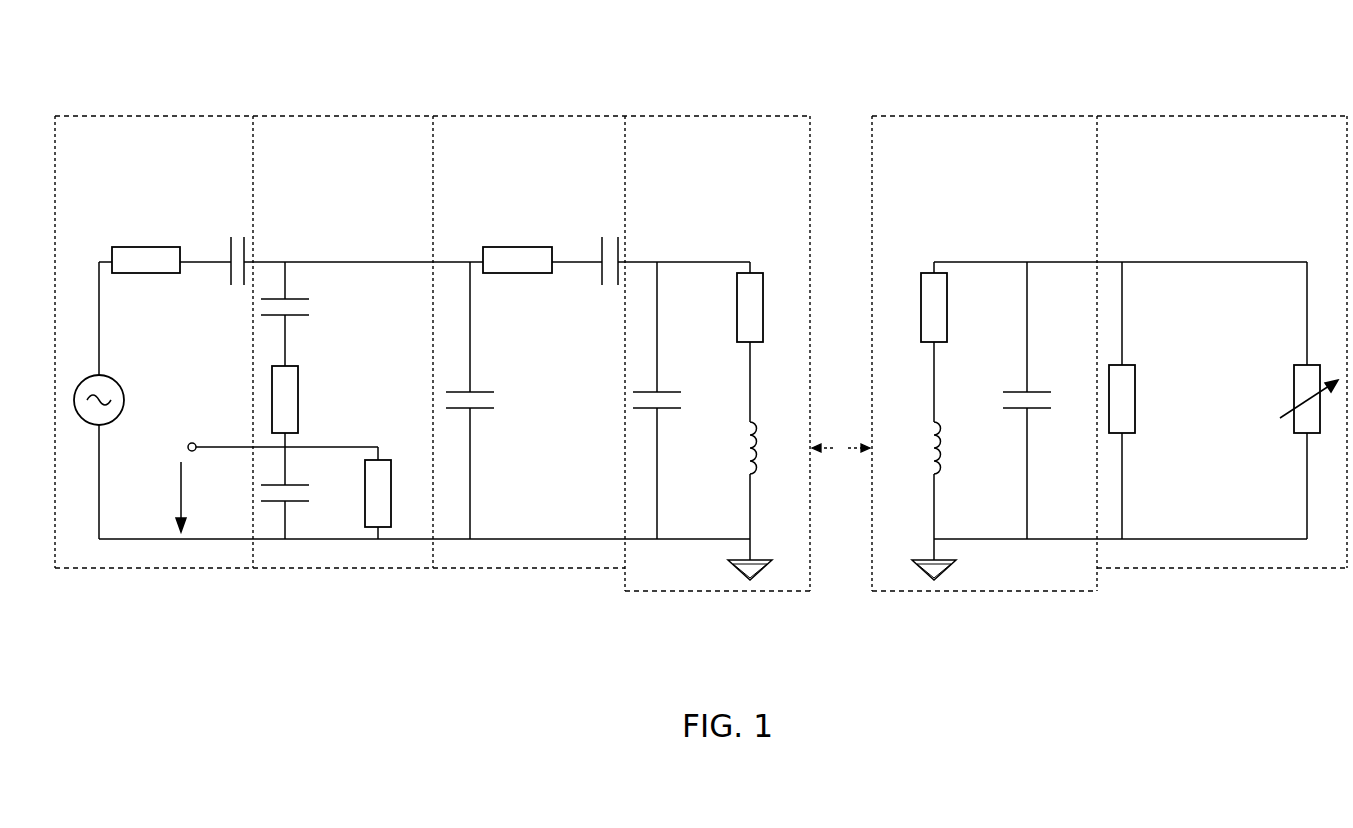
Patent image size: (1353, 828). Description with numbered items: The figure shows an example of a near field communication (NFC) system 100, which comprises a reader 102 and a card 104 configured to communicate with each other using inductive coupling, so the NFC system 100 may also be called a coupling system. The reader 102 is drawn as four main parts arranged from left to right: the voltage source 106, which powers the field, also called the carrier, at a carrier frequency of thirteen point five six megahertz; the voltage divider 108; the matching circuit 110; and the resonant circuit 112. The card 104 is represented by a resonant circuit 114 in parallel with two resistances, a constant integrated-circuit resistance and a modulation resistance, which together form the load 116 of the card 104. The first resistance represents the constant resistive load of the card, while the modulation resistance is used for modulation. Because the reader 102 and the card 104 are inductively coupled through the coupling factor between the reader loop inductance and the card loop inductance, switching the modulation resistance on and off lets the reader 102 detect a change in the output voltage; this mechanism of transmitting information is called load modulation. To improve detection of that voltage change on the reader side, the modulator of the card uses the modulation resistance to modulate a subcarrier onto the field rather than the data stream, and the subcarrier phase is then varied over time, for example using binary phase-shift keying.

The near field communication (NFC) system 100 is at (513, 76).
The reader 102 is at (457, 672).
The card 104 is at (1133, 672).
The voltage source 106 is at (178, 186).
The voltage divider 108 is at (367, 186).
The matching circuit 110 is at (555, 186).
The resonant circuit 112 is at (743, 186).
The resonant circuit 114 is at (1010, 186).
The load 116 is at (1247, 186).